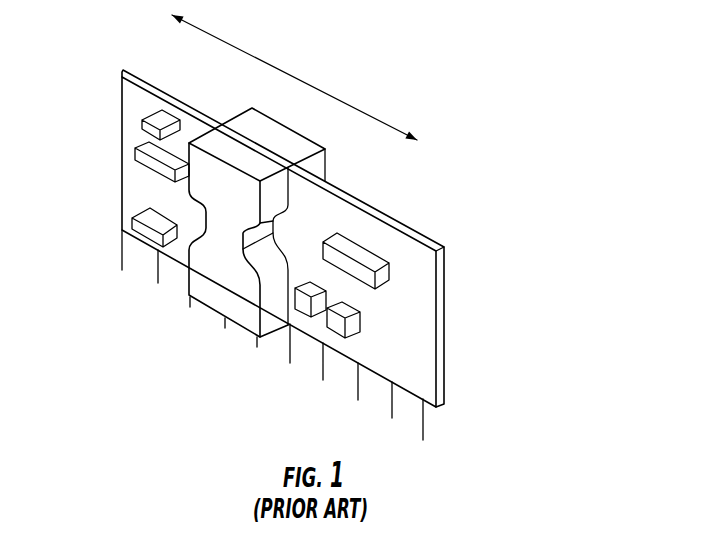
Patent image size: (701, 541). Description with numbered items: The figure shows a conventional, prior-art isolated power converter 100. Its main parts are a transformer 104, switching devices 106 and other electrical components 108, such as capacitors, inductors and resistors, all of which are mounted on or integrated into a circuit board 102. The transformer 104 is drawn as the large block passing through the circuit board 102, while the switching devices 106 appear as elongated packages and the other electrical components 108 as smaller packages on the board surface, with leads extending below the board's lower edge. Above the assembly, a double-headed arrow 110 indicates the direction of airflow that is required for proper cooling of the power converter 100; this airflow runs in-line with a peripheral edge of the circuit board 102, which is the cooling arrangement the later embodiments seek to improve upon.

The isolated power converter 100 is at (295, 228).
The circuit board 102 is at (415, 292).
The transformer 104 is at (218, 270).
The switching devices 106 is at (155, 164).
The other electrical components 108 is at (158, 122).
The arrow 110 is at (308, 84).